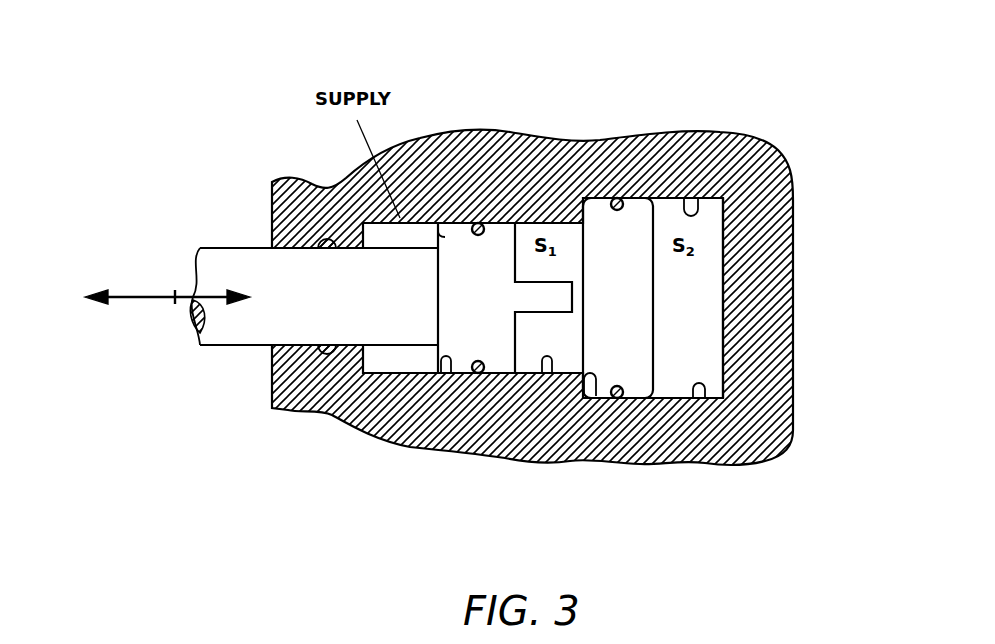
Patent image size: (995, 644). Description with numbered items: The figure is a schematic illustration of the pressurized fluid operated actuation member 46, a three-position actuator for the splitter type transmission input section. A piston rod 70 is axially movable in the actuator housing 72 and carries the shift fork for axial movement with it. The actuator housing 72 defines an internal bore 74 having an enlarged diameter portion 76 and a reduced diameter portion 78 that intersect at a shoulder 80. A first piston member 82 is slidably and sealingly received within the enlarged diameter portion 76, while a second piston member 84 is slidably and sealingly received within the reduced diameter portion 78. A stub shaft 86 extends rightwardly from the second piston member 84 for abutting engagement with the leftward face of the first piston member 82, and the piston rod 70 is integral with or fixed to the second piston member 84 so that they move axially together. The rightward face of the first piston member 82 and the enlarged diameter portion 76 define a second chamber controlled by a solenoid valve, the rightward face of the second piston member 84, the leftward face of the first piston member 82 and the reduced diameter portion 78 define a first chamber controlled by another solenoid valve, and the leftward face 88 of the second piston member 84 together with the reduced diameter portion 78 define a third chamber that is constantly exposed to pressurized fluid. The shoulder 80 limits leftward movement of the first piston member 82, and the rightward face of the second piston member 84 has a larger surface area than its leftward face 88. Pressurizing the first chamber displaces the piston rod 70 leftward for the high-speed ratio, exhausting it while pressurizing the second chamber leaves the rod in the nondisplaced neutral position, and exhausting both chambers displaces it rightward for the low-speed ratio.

The pressurized fluid operated actuation member 46 is at (302, 465).
The piston rod 70 is at (240, 270).
The actuator housing 72 is at (533, 175).
The internal bore 74 is at (752, 152).
The enlarged diameter portion 76 is at (742, 457).
The reduced diameter portion 78 is at (543, 375).
The shoulder 80 is at (597, 385).
The first piston member 82 is at (618, 298).
The second piston member 84 is at (505, 298).
The stub shaft 86 is at (448, 375).
The leftward face 88 is at (433, 220).